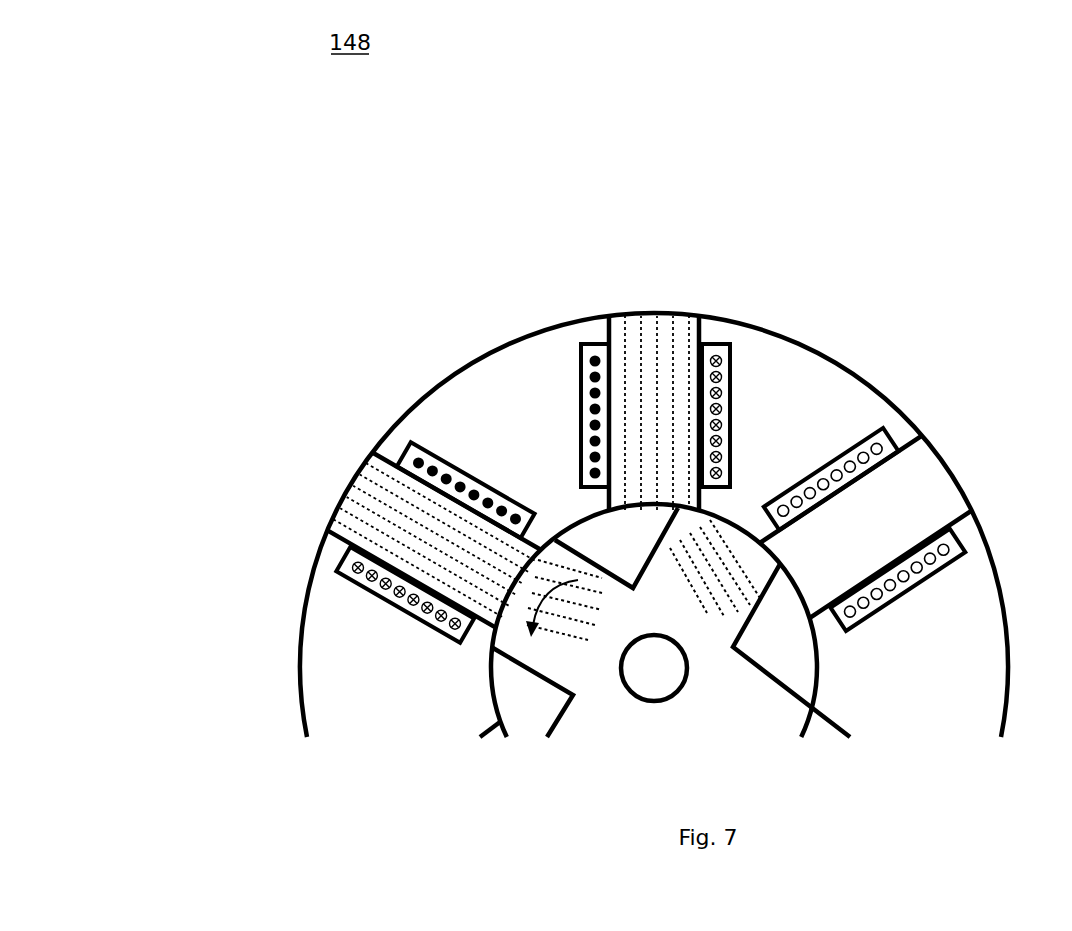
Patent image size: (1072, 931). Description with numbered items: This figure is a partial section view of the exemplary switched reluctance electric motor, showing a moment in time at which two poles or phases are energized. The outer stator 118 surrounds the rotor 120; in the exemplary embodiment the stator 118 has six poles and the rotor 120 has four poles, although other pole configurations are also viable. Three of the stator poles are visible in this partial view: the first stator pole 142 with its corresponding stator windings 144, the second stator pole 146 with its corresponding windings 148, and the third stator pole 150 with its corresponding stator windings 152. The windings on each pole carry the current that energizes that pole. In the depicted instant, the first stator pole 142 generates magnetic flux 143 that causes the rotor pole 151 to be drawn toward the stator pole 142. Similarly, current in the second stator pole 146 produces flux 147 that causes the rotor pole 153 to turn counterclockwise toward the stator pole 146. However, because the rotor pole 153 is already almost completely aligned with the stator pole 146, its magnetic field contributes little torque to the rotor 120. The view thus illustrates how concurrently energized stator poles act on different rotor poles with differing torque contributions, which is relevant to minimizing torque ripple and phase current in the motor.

The stator 118 is at (300, 647).
The rotor 120 is at (770, 717).
The first stator pole 142 is at (675, 333).
The magnetic flux 143 is at (710, 574).
The stator windings 144 is at (582, 430).
The second stator pole 146 is at (372, 487).
The magnetic flux lines 147 is at (587, 612).
The windings 148 is at (485, 490).
The third stator pole 150 is at (913, 480).
The rotor pole 151 is at (758, 560).
The stator windings 152 is at (860, 445).
The rotor pole 153 is at (522, 642).